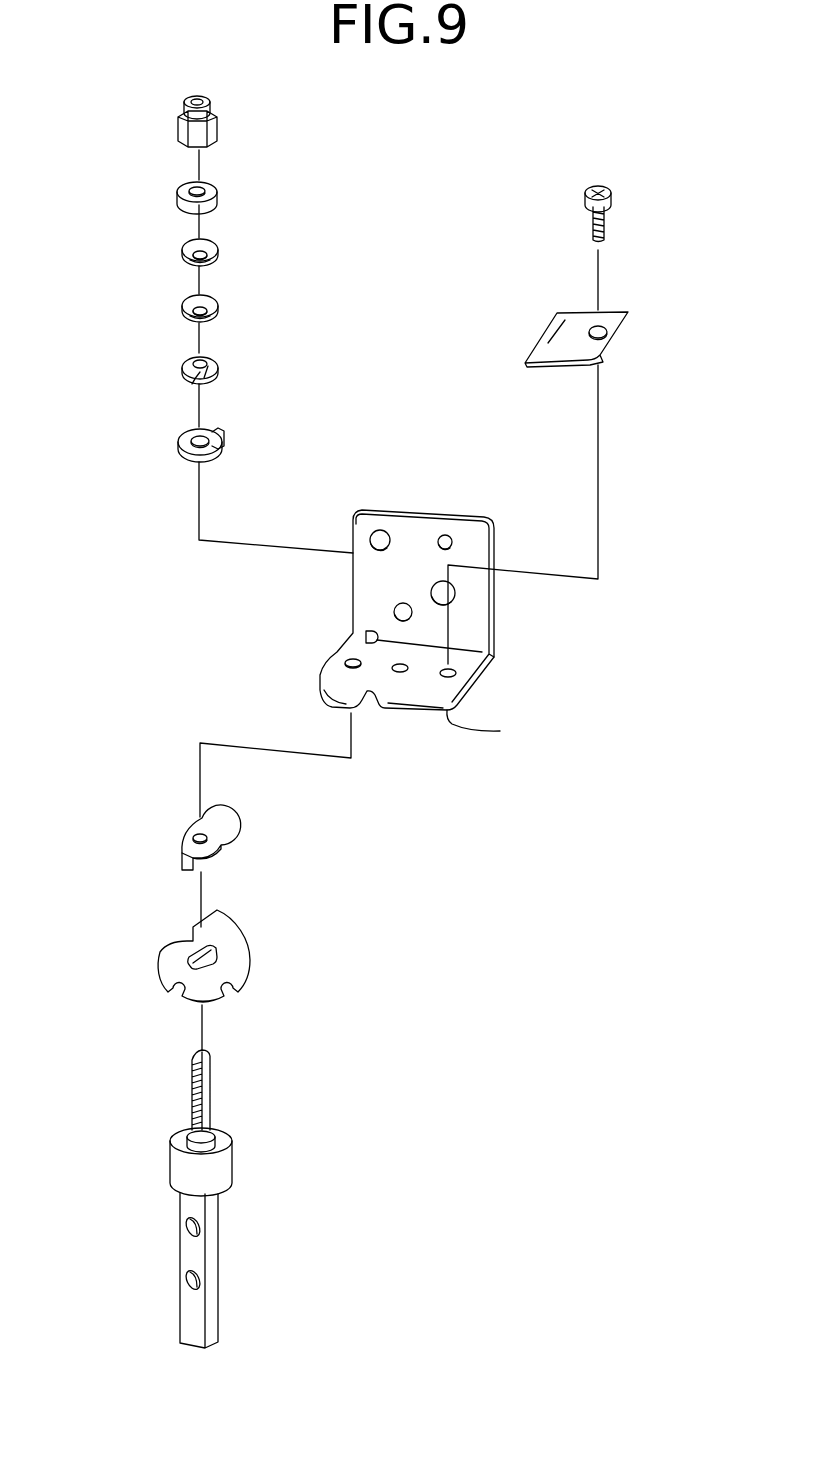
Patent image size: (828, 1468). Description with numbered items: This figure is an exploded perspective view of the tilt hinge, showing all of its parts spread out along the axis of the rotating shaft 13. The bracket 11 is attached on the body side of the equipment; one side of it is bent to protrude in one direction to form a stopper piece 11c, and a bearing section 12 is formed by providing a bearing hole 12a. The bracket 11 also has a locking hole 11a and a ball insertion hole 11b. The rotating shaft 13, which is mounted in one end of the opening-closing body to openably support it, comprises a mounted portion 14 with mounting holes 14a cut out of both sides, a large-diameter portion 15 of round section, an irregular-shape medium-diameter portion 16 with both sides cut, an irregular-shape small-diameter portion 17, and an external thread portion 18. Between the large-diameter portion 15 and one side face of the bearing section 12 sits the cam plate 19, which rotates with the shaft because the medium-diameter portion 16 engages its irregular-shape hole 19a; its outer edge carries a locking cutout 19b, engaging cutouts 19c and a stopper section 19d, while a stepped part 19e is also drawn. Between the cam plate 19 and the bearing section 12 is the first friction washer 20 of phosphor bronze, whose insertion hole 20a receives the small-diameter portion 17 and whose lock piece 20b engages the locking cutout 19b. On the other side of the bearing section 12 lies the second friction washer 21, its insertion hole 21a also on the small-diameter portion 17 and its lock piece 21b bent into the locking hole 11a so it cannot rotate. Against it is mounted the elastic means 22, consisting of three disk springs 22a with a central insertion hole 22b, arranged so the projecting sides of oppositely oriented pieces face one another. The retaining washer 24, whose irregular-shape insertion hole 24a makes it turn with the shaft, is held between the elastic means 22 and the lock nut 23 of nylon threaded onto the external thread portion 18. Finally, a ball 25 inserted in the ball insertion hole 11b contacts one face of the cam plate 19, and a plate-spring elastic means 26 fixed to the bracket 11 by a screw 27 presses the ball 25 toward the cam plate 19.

The bracket 11 is at (396, 629).
The locking hole 11a is at (365, 636).
The ball insertion hole 11b is at (402, 672).
The stopper piece 11c is at (500, 731).
The bearing section 12 is at (294, 684).
The bearing hole 12a is at (344, 660).
The rotating shaft 13 is at (214, 1199).
The mounted portion 14 is at (198, 1270).
The mounting holes 14a is at (188, 1283).
The large-diameter portion 15 is at (178, 1167).
The irregular-shape medium-diameter portion 16 is at (215, 1136).
The irregular-shape small-diameter portion 17 is at (192, 1118).
The external thread portion 18 is at (211, 1076).
The cam plate 19 is at (206, 946).
The irregular-shape hole 19a is at (215, 958).
The locking cutout 19b is at (172, 990).
The engaging cutouts 19c is at (232, 990).
The stopper section 19d is at (220, 908).
The step 19e is at (186, 934).
The first friction washer 20 is at (184, 822).
The insertion hole 20a is at (196, 832).
The lock piece 20b is at (182, 860).
The second friction washer 21 is at (198, 452).
The insertion hole 21a is at (214, 451).
The lock piece 21b is at (224, 436).
The elastic means 22 is at (193, 332).
The disk springs 22a is at (183, 252).
The insertion hole 22b is at (192, 268).
The lock nut 23 is at (178, 118).
The retaining washer 24 is at (198, 198).
The irregular-shape insertion hole 24a is at (205, 190).
The ball 25 is at (398, 606).
The elastic means 26 is at (595, 360).
The screw 27 is at (612, 197).